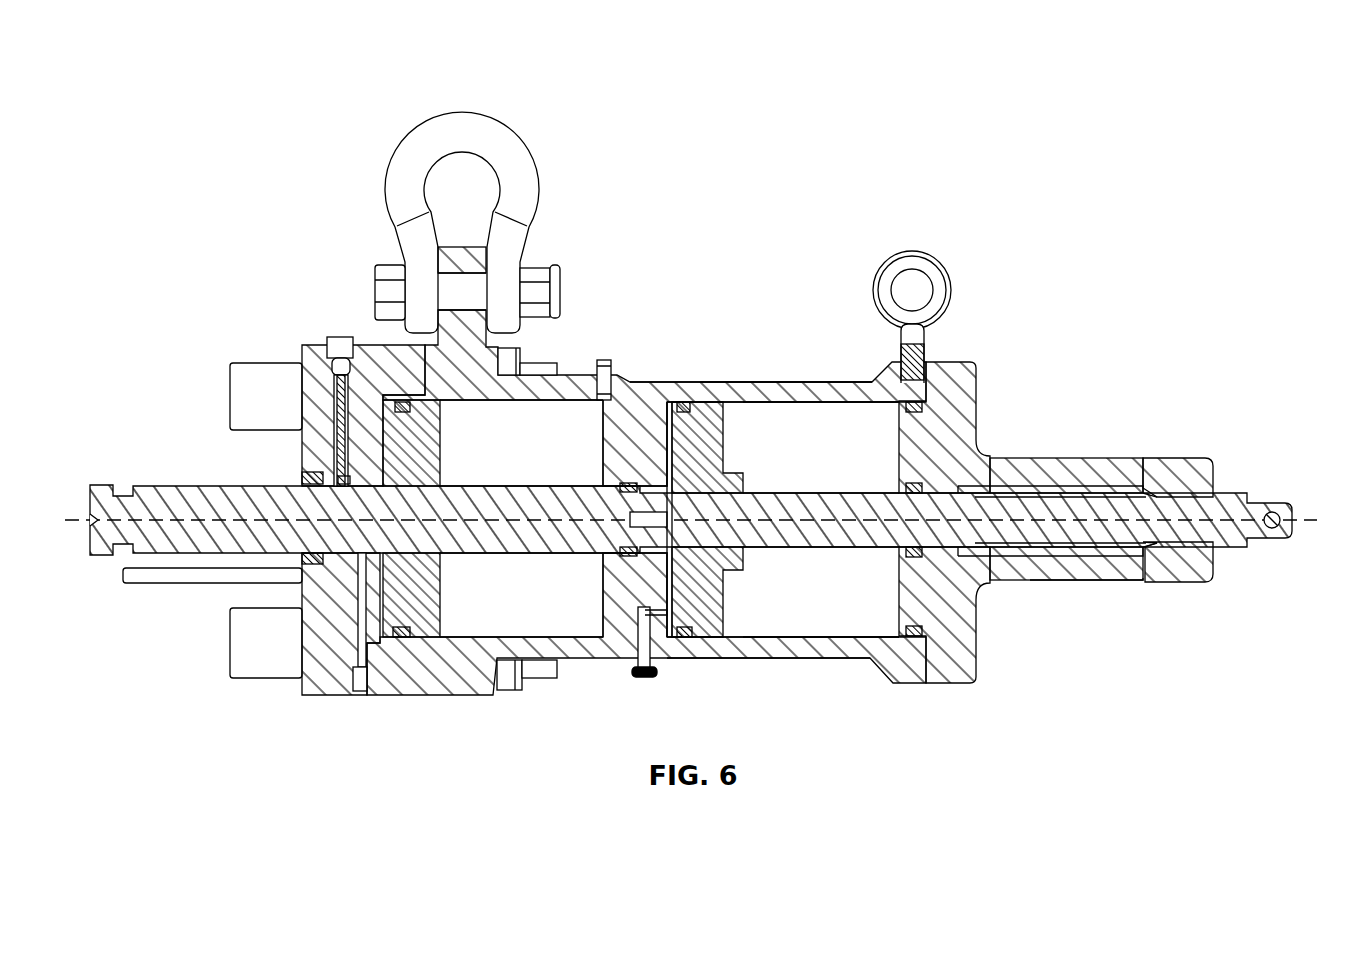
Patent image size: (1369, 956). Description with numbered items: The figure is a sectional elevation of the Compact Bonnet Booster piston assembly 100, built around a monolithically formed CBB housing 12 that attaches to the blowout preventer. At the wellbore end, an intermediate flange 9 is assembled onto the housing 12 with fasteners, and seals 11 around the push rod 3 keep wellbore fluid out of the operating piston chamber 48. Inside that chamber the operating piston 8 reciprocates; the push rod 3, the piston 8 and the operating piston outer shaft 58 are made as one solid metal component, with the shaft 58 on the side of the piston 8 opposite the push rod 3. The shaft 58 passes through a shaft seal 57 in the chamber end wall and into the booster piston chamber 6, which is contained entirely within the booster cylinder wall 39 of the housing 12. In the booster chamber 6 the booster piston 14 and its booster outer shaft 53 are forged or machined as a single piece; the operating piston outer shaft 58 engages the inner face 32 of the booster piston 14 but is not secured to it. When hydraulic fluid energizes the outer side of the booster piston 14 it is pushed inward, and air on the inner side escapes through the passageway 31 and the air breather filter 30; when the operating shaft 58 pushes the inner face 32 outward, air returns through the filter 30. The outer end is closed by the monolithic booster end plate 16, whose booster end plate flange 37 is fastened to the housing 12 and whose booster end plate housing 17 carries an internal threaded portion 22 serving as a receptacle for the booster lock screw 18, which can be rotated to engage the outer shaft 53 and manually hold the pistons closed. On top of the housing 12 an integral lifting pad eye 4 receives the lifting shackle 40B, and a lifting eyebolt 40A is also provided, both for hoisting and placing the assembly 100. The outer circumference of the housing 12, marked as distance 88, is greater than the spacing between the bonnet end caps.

The push rod 3 is at (157, 500).
The lifting pad eye 4 is at (450, 270).
The booster piston chamber 6 is at (792, 594).
The operating piston 8 is at (430, 416).
The intermediate flange 9 is at (323, 684).
The seals 11 is at (293, 479).
The CBB housing 12 is at (815, 382).
The booster piston 14 is at (703, 418).
The booster end plate 16 is at (1070, 601).
The booster end plate housing 17 is at (1066, 458).
The booster lock screw 18 is at (1296, 523).
The internal threaded portion 22 is at (1193, 460).
The air breather filter 30 is at (648, 678).
The passageway 31 is at (643, 640).
The inner face of booster piston 32 is at (670, 572).
The booster end plate flange 37 is at (957, 363).
The booster cylinder wall 39 is at (770, 397).
The lifting eyebolt 40A is at (906, 262).
The lifting shackle 40B is at (470, 134).
The operating piston chamber 48 is at (490, 623).
The booster outer shaft 53 is at (838, 533).
The shaft seal 57 is at (603, 551).
The operating piston outer shaft 58 is at (518, 537).
The outer circumference distance 88 is at (813, 660).
The Compact Bonnet Booster piston assembly 100 is at (1108, 243).